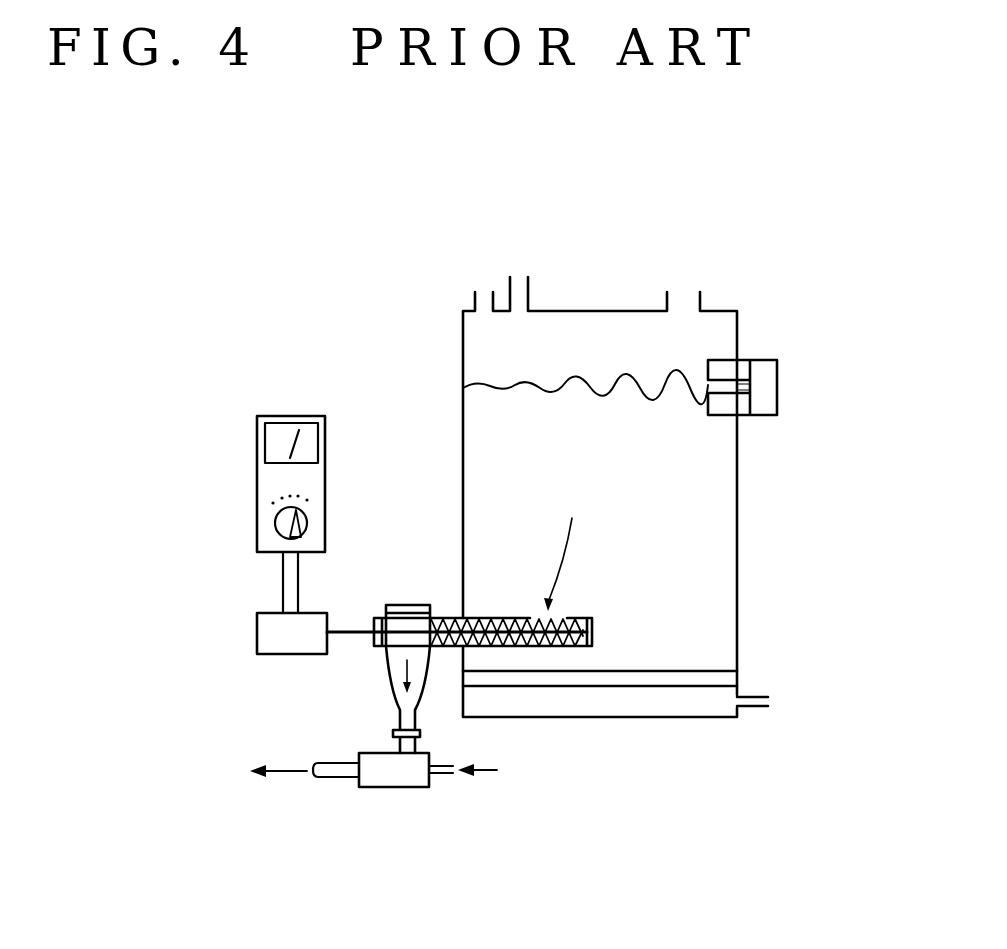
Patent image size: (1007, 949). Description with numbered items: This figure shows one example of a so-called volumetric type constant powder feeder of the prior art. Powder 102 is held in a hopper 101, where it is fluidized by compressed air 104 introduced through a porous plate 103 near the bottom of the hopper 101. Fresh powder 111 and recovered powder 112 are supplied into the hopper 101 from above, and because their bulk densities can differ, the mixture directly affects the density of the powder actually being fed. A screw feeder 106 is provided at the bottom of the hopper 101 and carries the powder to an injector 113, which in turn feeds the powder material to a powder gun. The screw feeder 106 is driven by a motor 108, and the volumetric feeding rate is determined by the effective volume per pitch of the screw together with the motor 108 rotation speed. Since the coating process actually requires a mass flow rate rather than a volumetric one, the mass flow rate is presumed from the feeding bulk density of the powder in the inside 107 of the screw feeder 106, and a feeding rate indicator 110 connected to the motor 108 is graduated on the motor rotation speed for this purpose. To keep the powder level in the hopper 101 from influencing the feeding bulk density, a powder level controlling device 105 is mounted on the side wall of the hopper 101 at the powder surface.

The hopper 101 is at (740, 520).
The powder 102 is at (705, 466).
The porous plate 103 is at (682, 677).
The compressed air 104 is at (786, 703).
The powder level controlling device 105 is at (757, 360).
The screw feeder 106 is at (447, 618).
The inside of the screw feeder 107 is at (477, 618).
The motor 108 is at (256, 632).
The feeding rate indicator 110 is at (283, 428).
The fresh powder 111 is at (485, 280).
The recovered powder 112 is at (520, 266).
The injector 113 is at (393, 787).